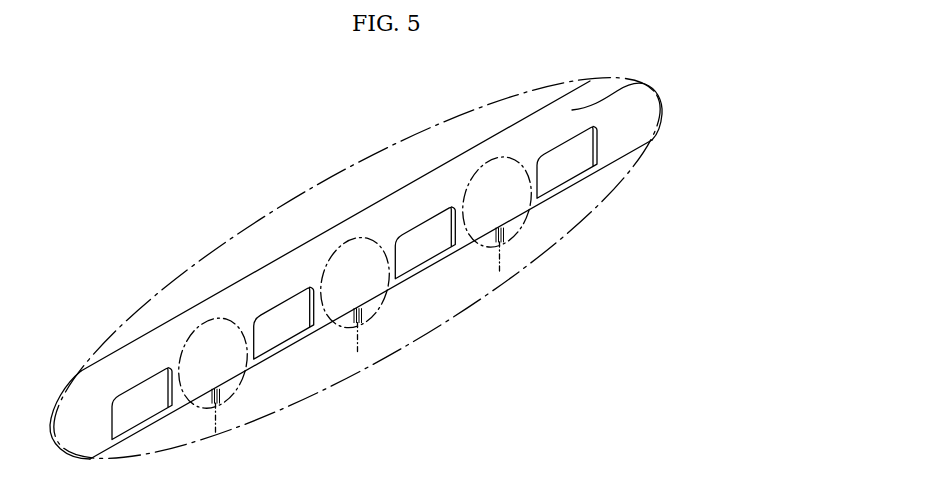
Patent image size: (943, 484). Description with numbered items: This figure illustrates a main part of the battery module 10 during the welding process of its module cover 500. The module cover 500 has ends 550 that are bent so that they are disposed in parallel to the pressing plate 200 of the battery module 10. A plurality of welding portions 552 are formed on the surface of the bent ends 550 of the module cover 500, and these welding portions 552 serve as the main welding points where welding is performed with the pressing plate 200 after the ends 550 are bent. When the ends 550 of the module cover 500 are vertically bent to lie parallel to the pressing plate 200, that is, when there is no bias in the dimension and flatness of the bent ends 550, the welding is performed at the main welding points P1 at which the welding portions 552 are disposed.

The battery module 10 is at (243, 145).
The module cover 500 is at (433, 157).
The ends of the module cover 550 is at (645, 84).
The welding portions 552 is at (358, 283).
The pressing plate 200 is at (547, 223).
The main welding points P1 is at (225, 393).